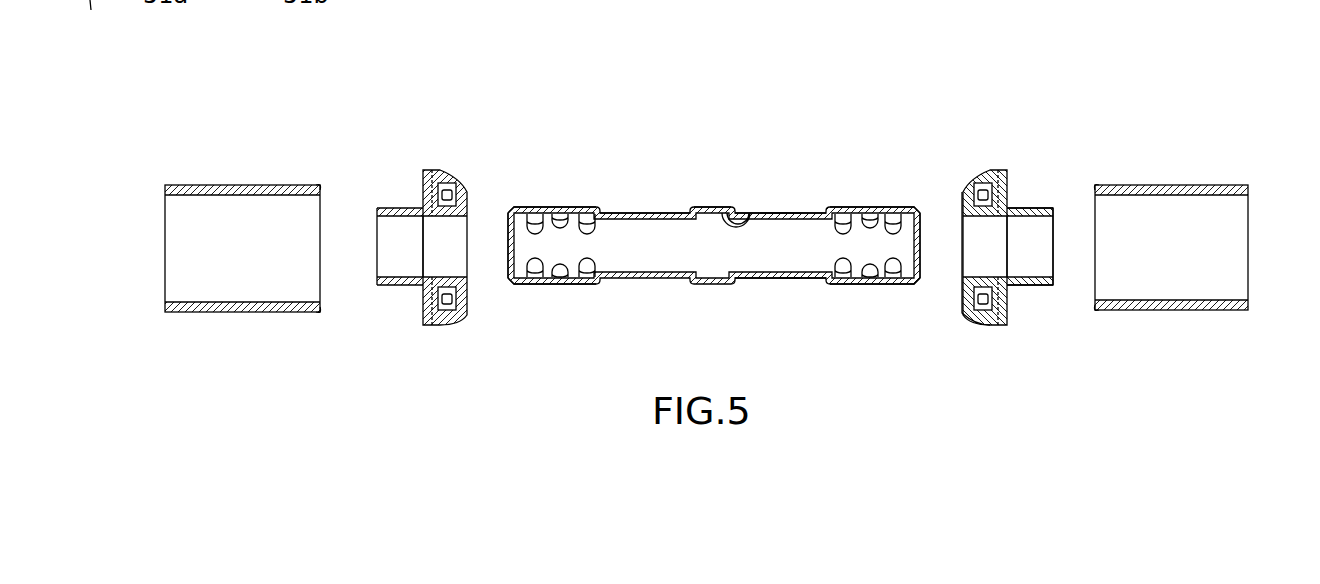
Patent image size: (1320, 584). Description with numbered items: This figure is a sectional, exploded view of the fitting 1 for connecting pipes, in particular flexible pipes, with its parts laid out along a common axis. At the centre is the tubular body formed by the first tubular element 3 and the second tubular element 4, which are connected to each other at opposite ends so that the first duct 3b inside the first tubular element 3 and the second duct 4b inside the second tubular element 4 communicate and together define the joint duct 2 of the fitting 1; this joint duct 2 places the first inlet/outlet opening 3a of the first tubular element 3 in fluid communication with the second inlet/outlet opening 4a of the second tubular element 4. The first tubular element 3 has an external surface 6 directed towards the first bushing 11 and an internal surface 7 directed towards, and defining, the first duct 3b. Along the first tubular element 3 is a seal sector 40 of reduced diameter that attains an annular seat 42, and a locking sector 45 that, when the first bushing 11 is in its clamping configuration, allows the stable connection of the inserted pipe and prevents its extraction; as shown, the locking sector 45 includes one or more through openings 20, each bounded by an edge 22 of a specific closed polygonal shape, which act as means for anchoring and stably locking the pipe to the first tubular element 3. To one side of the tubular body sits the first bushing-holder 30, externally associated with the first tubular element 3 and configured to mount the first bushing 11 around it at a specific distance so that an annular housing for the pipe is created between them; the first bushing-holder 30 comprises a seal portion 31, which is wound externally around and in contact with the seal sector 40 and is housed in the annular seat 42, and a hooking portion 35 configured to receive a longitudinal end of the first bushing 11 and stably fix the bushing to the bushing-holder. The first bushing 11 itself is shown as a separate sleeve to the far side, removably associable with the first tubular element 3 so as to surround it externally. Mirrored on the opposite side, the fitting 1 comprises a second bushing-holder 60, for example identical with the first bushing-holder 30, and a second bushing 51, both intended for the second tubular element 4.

The fitting 1 is at (1132, 68).
The joint duct 2 is at (722, 260).
The first tubular element 3 is at (704, 237).
The first inlet/outlet opening 3a is at (922, 238).
The first duct 3b is at (792, 260).
The second tubular element 4 is at (628, 178).
The second inlet/outlet opening 4a is at (508, 210).
The second duct 4b is at (660, 260).
The external surface 6 is at (778, 213).
The internal surface 7 is at (723, 222).
The first bushing 11 is at (1198, 167).
The through openings 20 is at (527, 292).
The edge 22 is at (548, 283).
The first bushing-holder 30 is at (1001, 239).
The seal portion 31 is at (1025, 290).
The hooking portion 35 is at (978, 324).
The seal sector 40 is at (766, 324).
The annular seat 42 is at (772, 283).
The locking sector 45 is at (845, 290).
The second bushing 51 is at (188, 172).
The second bushing-holder 60 is at (417, 153).